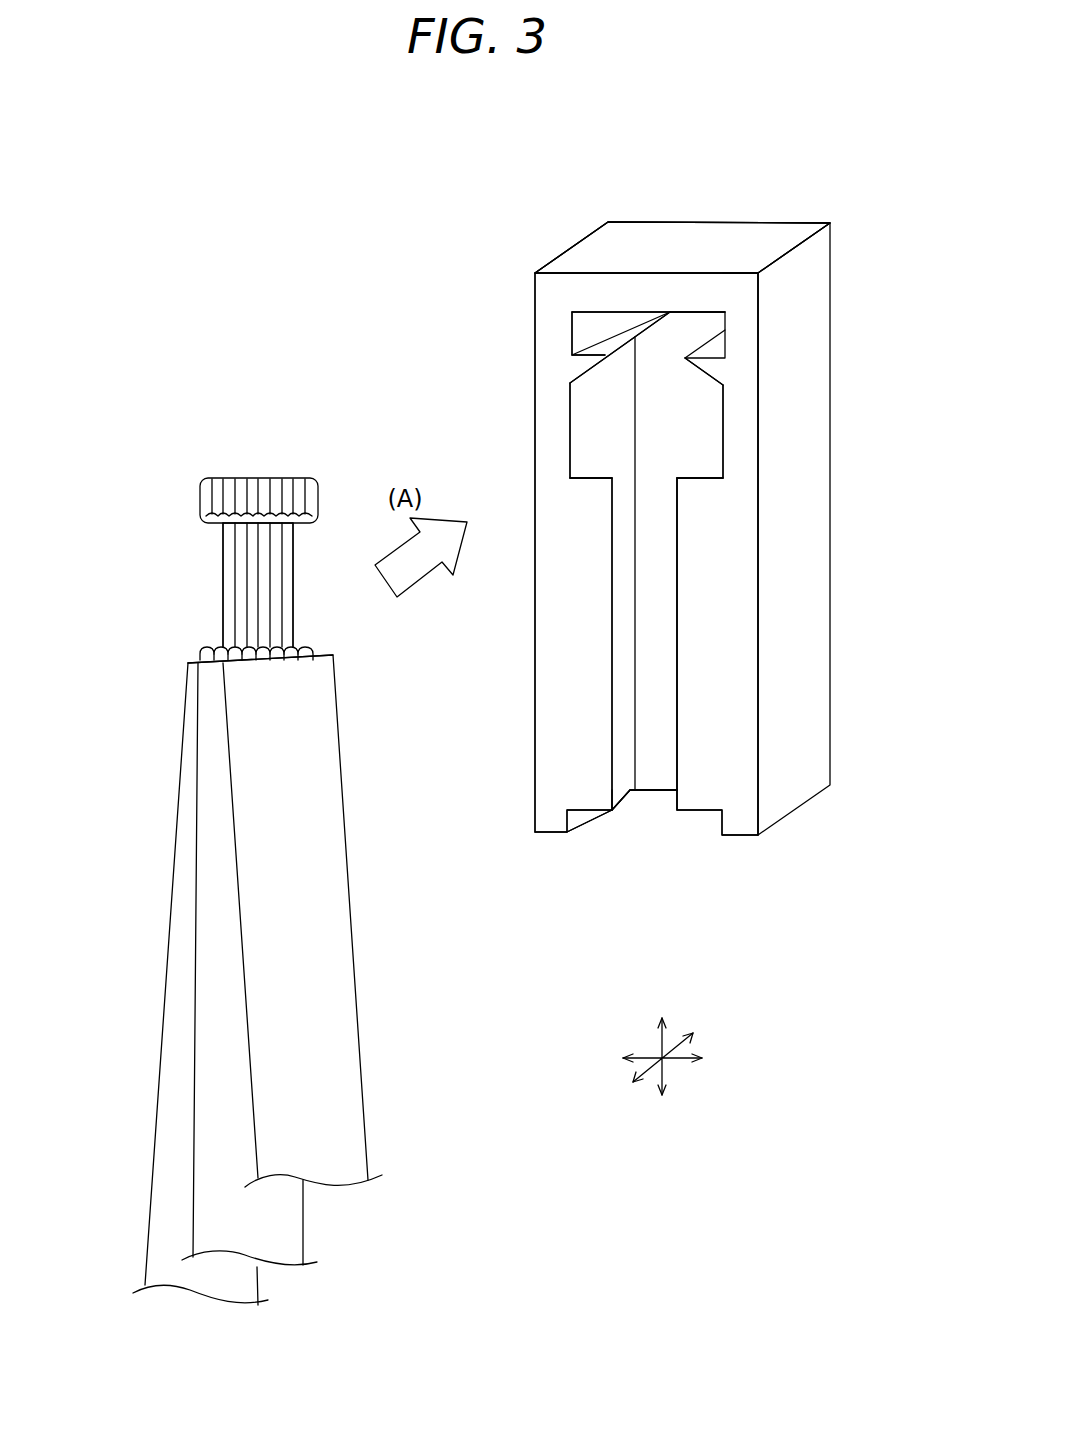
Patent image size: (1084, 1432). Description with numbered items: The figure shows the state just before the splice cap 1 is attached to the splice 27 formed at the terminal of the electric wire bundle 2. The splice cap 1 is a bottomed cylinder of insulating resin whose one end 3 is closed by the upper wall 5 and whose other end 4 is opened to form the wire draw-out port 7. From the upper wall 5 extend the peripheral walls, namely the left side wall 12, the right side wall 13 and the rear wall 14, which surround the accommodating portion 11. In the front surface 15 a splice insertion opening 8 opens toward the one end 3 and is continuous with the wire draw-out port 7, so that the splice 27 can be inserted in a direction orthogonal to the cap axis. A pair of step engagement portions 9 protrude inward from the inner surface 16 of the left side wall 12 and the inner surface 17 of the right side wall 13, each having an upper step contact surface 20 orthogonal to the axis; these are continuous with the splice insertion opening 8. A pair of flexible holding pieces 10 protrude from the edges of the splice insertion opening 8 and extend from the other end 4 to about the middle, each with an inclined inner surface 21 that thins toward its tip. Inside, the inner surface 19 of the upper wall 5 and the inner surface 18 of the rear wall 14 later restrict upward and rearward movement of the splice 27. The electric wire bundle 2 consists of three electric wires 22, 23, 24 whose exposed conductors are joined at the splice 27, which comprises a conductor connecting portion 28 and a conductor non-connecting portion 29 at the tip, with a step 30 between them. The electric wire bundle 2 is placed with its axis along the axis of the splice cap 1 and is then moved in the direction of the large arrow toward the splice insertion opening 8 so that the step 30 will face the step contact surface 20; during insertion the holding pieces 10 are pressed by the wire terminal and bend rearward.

The splice cap 1 is at (483, 247).
The electric wire bundle 2 is at (150, 445).
The one end 3 is at (790, 222).
The other end 4 is at (567, 832).
The upper wall 5 is at (767, 240).
The wire draw-out port 7 is at (635, 795).
The splice insertion opening 8 is at (574, 404).
The step engagement portions 9 is at (583, 364).
The holding pieces 10 is at (604, 510).
The accommodating portion 11 is at (653, 423).
The left side wall 12 is at (533, 425).
The right side wall 13 is at (800, 428).
The rear wall 14 is at (658, 792).
The front surface 15 is at (733, 562).
The inner surface of the left side wall 16 is at (580, 336).
The inner surface of the right side wall 17 is at (722, 404).
The inner surface of the rear wall 18 is at (650, 735).
The inner surface of the upper wall 19 is at (693, 312).
The step contact surface 20 is at (616, 338).
The inner surface of the holding piece 21 is at (598, 470).
The electric wire 22 is at (343, 765).
The electric wire 23 is at (197, 772).
The electric wire 24 is at (177, 820).
The splice 27 is at (123, 485).
The conductor connecting portion 28 is at (223, 598).
The conductor non-connecting portion 29 is at (200, 500).
The step 30 is at (223, 527).